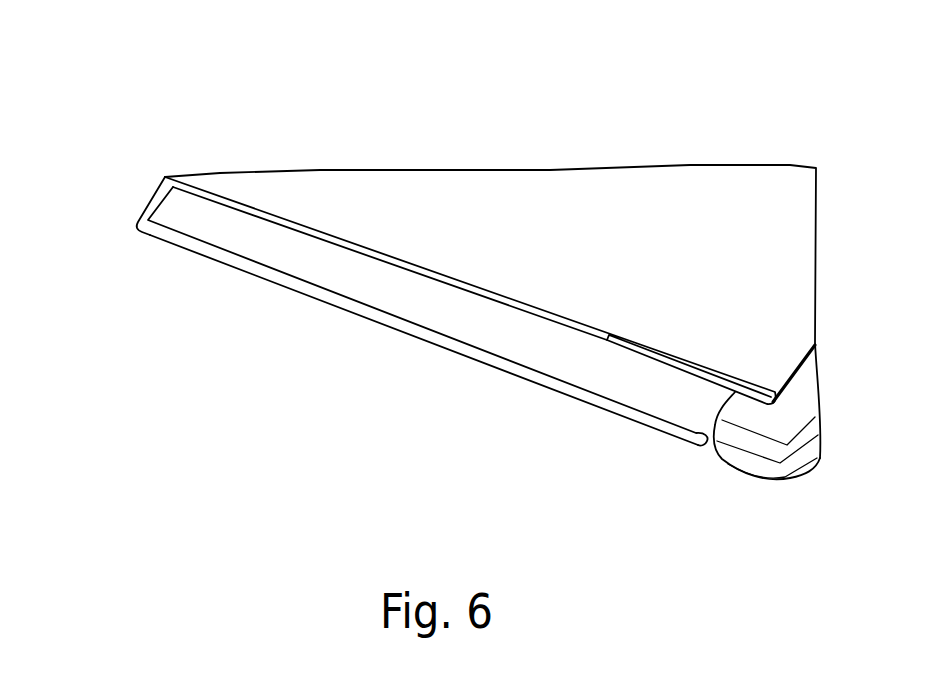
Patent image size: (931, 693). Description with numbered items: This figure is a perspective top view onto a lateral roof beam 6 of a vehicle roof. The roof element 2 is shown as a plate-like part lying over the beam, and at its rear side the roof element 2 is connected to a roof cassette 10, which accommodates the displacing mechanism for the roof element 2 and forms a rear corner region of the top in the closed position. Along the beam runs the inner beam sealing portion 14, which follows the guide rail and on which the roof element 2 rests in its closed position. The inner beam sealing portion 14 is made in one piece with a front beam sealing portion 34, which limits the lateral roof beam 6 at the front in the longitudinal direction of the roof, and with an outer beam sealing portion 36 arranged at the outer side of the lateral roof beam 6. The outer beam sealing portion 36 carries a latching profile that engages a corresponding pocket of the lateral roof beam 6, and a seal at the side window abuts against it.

The roof element 2 is at (610, 160).
The lateral roof beam 6 is at (670, 436).
The roof cassette 10 is at (778, 484).
The inner beam sealing portion 14 is at (211, 176).
The front beam sealing portion 34 is at (150, 193).
The outer beam sealing portion 36 is at (202, 254).